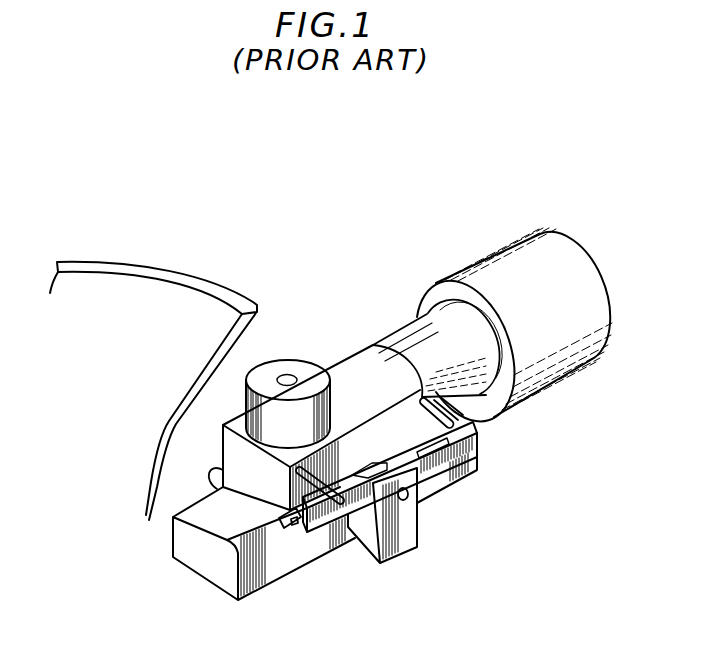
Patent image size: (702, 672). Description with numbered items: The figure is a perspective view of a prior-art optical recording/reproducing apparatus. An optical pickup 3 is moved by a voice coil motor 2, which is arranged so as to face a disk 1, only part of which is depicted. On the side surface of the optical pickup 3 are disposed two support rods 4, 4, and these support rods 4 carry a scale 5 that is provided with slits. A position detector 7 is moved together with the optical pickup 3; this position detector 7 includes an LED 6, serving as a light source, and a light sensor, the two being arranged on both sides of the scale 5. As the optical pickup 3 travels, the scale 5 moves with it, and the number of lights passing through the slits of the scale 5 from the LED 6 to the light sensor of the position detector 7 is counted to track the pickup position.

The disk 1 is at (147, 262).
The voice coil motor 2 is at (440, 282).
The optical pickup 3 is at (297, 358).
The support rods 4 is at (470, 402).
The scale 5 is at (477, 453).
The LED 6 is at (407, 494).
The position detector 7 is at (403, 550).